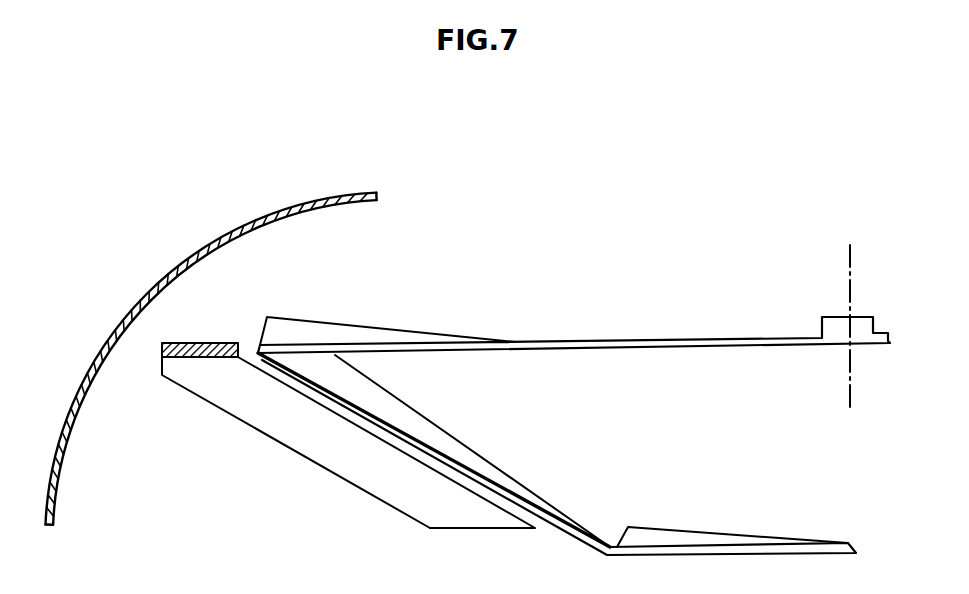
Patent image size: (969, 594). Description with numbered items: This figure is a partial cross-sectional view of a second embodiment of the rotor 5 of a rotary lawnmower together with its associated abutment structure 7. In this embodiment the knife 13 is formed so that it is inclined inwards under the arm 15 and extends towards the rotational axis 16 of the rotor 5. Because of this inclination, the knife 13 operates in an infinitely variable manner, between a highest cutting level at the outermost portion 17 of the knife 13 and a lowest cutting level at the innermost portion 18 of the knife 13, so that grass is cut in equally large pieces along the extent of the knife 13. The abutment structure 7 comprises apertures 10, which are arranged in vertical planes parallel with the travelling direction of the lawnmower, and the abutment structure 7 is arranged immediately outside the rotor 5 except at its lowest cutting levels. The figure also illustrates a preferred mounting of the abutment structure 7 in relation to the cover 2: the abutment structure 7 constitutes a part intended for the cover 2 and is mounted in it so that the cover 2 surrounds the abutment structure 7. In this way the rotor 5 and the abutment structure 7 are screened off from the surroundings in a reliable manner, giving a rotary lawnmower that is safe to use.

The cover 2 is at (191, 263).
The rotor 5 is at (672, 341).
The abutment structure 7 is at (266, 436).
The apertures 10 is at (347, 447).
The knife 13 is at (467, 470).
The arm 15 is at (511, 344).
The rotational axis 16 is at (848, 265).
The outermost portion 17 is at (268, 377).
The innermost portion 18 is at (589, 544).